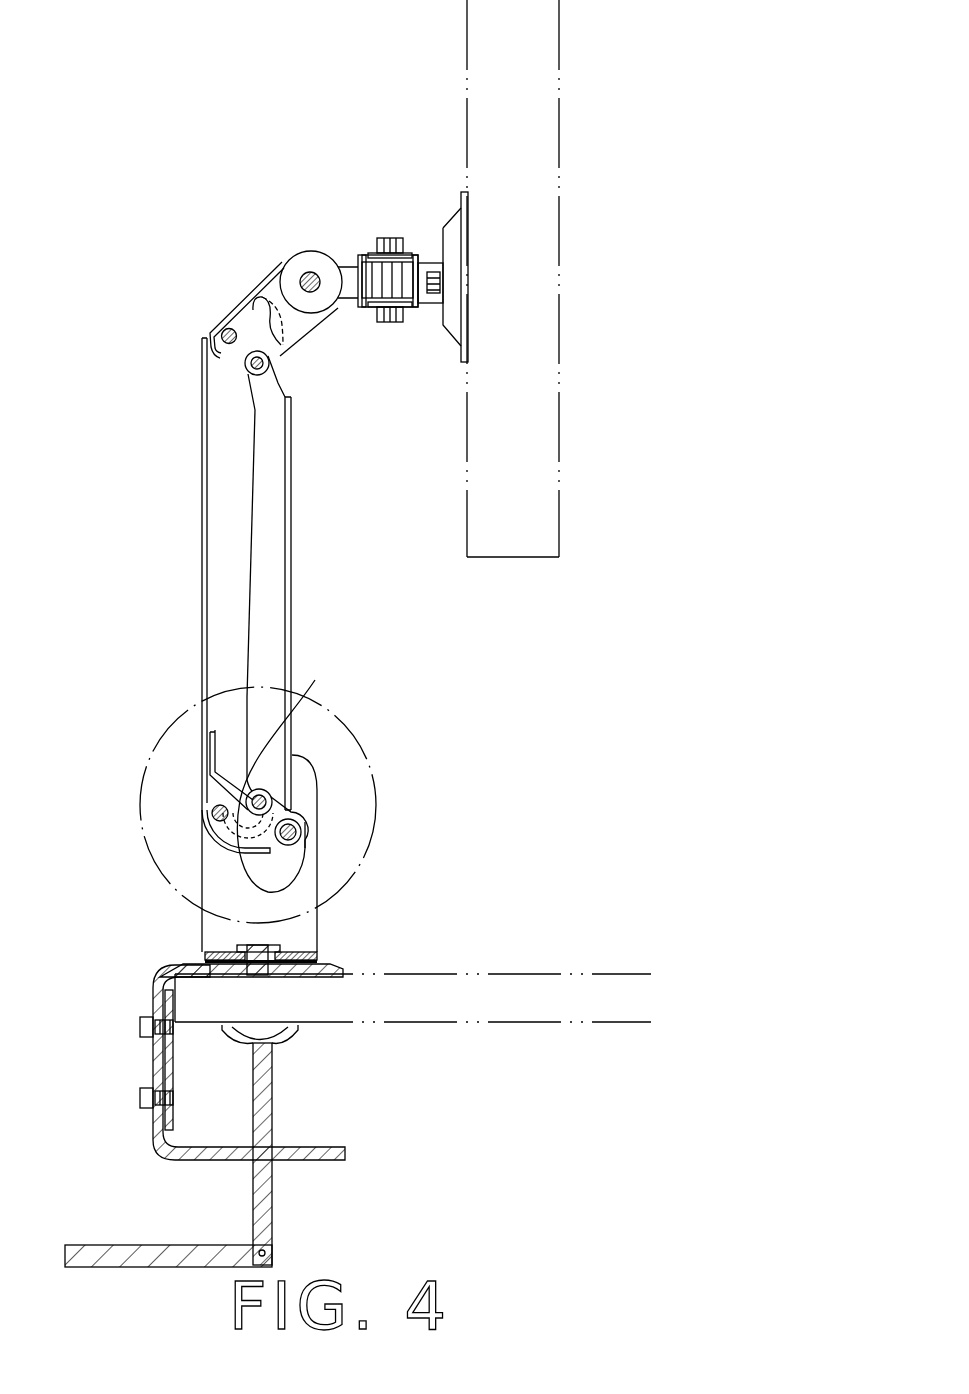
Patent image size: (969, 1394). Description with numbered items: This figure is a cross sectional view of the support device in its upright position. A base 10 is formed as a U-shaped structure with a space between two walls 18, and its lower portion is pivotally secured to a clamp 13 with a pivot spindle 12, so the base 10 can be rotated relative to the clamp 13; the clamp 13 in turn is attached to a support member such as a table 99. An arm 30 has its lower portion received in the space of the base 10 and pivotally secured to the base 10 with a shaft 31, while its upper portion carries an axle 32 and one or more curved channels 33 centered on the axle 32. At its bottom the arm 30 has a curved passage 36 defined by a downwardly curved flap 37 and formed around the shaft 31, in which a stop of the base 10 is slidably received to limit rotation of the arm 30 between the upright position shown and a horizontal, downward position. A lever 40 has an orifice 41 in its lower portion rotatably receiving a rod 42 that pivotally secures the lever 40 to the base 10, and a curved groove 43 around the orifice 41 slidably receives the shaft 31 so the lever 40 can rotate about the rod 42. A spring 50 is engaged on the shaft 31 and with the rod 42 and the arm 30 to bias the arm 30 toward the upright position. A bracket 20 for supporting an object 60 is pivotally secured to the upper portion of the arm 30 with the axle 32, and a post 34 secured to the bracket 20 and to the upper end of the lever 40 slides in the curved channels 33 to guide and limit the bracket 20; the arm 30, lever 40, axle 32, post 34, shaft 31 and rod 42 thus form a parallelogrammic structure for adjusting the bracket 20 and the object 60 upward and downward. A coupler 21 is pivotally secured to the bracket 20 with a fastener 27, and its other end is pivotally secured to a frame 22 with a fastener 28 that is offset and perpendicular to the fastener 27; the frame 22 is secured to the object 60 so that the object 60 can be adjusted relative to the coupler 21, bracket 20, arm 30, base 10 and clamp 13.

The base 10 is at (200, 925).
The pivot spindle 12 is at (281, 948).
The clamp 13 is at (162, 975).
The walls 18 is at (307, 790).
The bracket 20 is at (270, 293).
The coupler 21 is at (314, 251).
The frame 22 is at (459, 328).
The fastener 27 is at (306, 276).
The fastener 28 is at (386, 238).
The arm 30 is at (202, 522).
The shaft 31 is at (263, 790).
The axle 32 is at (225, 329).
The curved channels 33 is at (270, 333).
The post 34 is at (251, 368).
The curved passage 36 is at (212, 826).
The downwardly curved flap 37 is at (217, 838).
The lever 40 is at (292, 578).
The orifice 41 is at (325, 875).
The rod 42 is at (303, 833).
The curved groove 43 is at (233, 853).
The spring 50 is at (203, 700).
The object 60 is at (559, 225).
The table 99 is at (518, 1007).